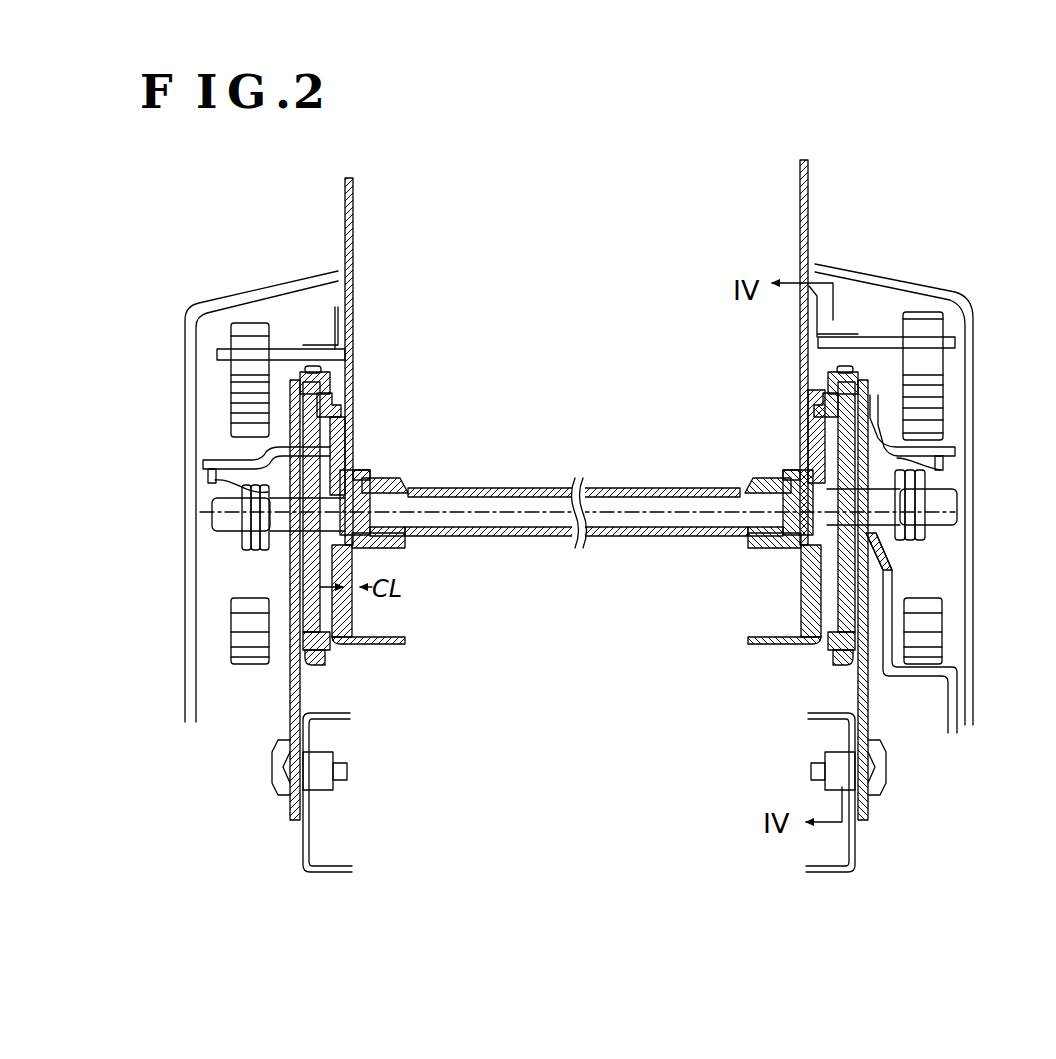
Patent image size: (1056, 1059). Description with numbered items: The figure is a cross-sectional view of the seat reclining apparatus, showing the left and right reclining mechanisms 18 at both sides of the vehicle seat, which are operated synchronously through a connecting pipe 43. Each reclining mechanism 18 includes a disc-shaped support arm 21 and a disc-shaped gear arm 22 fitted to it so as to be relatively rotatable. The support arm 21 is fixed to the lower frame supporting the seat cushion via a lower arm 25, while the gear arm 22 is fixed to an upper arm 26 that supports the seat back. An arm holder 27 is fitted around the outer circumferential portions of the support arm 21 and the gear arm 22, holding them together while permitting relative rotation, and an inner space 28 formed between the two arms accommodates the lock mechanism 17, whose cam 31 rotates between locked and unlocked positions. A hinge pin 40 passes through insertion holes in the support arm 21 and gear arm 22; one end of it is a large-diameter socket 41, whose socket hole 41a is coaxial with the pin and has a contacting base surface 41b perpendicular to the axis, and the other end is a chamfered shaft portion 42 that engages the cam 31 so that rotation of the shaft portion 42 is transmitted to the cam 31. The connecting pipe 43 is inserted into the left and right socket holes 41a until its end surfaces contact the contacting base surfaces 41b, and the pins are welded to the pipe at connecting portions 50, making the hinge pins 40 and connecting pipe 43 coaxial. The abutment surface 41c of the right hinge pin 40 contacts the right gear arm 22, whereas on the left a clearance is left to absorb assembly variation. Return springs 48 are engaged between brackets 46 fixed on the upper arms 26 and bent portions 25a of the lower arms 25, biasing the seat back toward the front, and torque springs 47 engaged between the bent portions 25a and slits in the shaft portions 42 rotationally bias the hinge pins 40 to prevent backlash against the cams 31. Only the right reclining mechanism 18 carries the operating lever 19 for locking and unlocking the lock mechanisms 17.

The lock mechanism 17 is at (298, 582).
The reclining mechanism 18 is at (334, 380).
The operating lever 19 is at (947, 676).
The support arm 21 is at (330, 408).
The gear arm 22 is at (342, 410).
The lower arm 25 is at (292, 708).
The bent portion 25a is at (214, 466).
The upper arm 26 is at (353, 236).
The arm holder 27 is at (313, 667).
The inner space 28 is at (322, 606).
The cam 31 is at (300, 580).
The hinge pin 40 is at (398, 552).
The socket 41 is at (400, 486).
The socket hole 41a is at (365, 472).
The contacting base surface 41b is at (420, 537).
The abutment surface 41c is at (348, 450).
The shaft portion 42 is at (220, 510).
The connecting pipe 43 is at (600, 488).
The bracket 46 is at (303, 350).
The torque spring 47 is at (245, 556).
The return spring 48 is at (248, 327).
The connecting portion 50 is at (398, 482).